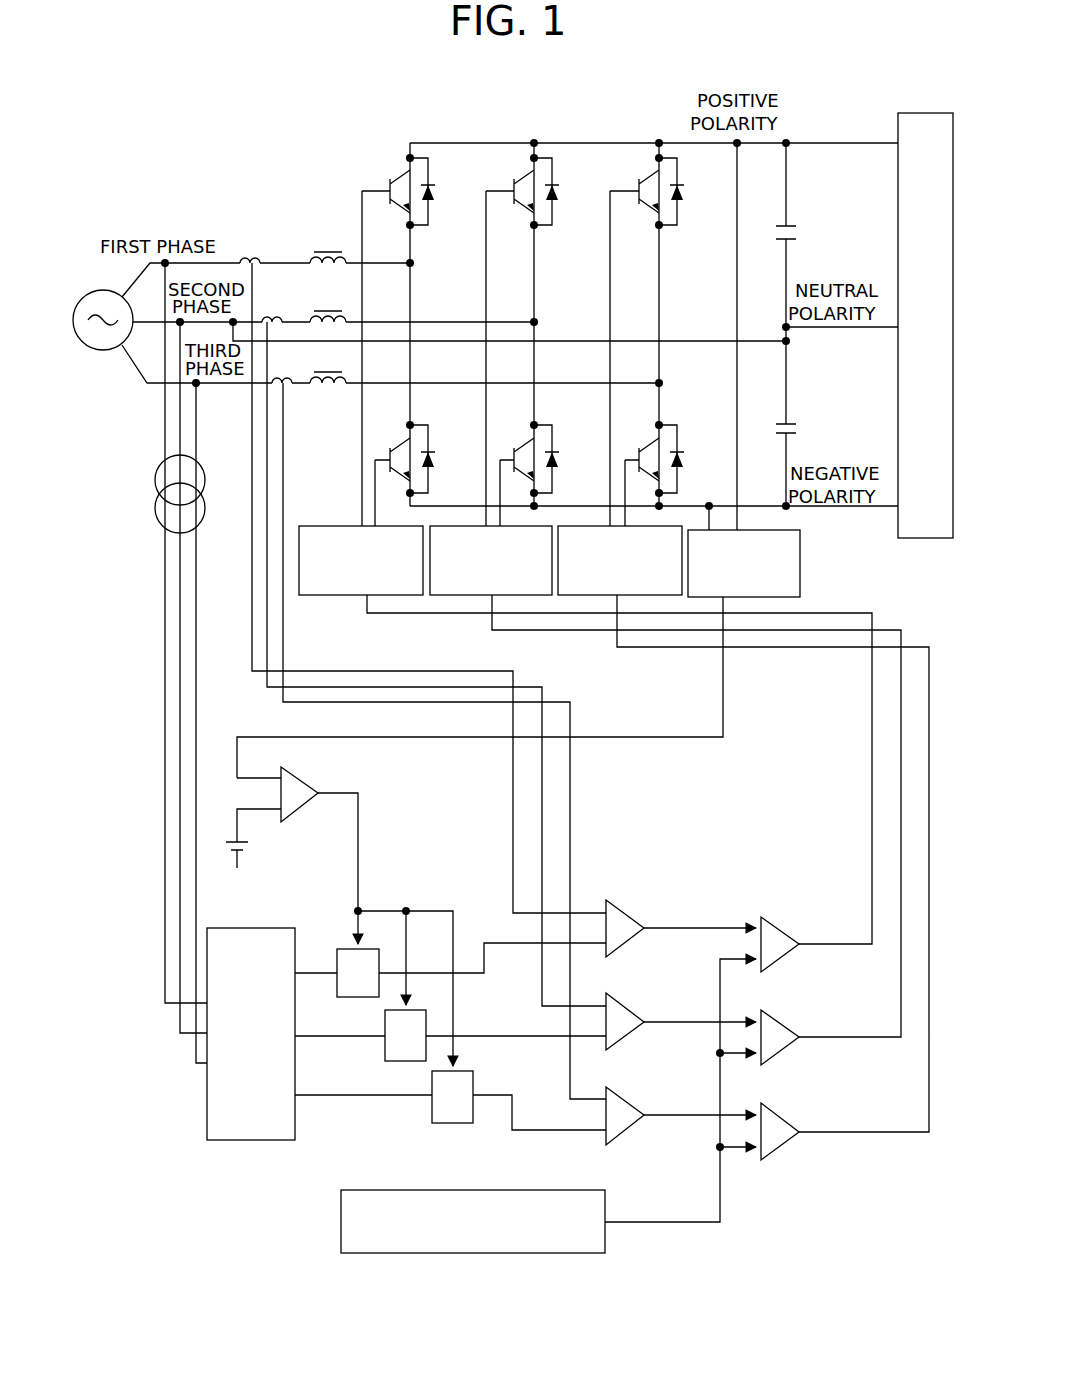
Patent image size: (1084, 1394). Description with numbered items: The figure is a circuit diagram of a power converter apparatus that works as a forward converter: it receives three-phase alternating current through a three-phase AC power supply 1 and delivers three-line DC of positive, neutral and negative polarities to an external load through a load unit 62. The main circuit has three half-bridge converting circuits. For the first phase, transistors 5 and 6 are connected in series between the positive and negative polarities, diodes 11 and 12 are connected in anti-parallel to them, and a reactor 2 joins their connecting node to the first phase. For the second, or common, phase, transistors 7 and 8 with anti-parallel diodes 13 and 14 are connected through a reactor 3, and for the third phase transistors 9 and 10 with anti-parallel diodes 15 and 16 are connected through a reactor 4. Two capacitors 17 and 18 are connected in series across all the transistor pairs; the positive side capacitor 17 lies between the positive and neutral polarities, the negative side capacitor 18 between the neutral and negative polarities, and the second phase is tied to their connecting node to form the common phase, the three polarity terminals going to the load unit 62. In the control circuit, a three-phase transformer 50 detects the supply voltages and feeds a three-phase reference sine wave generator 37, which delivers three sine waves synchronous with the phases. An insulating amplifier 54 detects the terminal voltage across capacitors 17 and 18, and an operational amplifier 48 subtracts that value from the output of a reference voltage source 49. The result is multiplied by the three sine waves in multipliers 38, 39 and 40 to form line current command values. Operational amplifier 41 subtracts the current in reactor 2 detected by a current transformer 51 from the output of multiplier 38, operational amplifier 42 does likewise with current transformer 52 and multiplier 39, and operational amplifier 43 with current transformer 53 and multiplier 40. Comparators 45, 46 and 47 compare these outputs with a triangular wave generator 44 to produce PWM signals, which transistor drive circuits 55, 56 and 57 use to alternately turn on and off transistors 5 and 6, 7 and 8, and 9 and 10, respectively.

The three-phase AC power supply 1 is at (98, 360).
The reactor 2 is at (328, 247).
The reactor 3 is at (328, 306).
The reactor 4 is at (330, 390).
The transistor 5 is at (398, 166).
The transistor 6 is at (394, 438).
The transistor 7 is at (522, 166).
The transistor 8 is at (520, 438).
The transistor 9 is at (648, 166).
The transistor 10 is at (646, 438).
The diode 11 is at (433, 205).
The diode 12 is at (433, 468).
The diode 13 is at (557, 205).
The diode 14 is at (557, 468).
The diode 15 is at (682, 205).
The diode 16 is at (682, 468).
The capacitor 17 is at (798, 233).
The capacitor 18 is at (798, 429).
The three-phase reference sine wave generator 37 is at (246, 1142).
The multiplier 38 is at (346, 944).
The multiplier 39 is at (382, 1052).
The multiplier 40 is at (432, 1118).
The operational amplifier 41 is at (626, 910).
The operational amplifier 42 is at (626, 1004).
The operational amplifier 43 is at (626, 1097).
The triangular wave generator 44 is at (606, 1190).
The comparator 45 is at (780, 926).
The comparator 46 is at (780, 1019).
The comparator 47 is at (780, 1113).
The operational amplifier 48 is at (300, 812).
The reference voltage source 49 is at (250, 848).
The three-phase transformer 50 is at (148, 507).
The current transformer 51 is at (249, 252).
The current transformer 52 is at (270, 312).
The current transformer 53 is at (290, 392).
The insulating amplifier 54 is at (802, 568).
The transistor drive circuit 55 is at (341, 597).
The transistor drive circuit 56 is at (466, 597).
The transistor drive circuit 57 is at (596, 597).
The load unit 62 is at (898, 127).